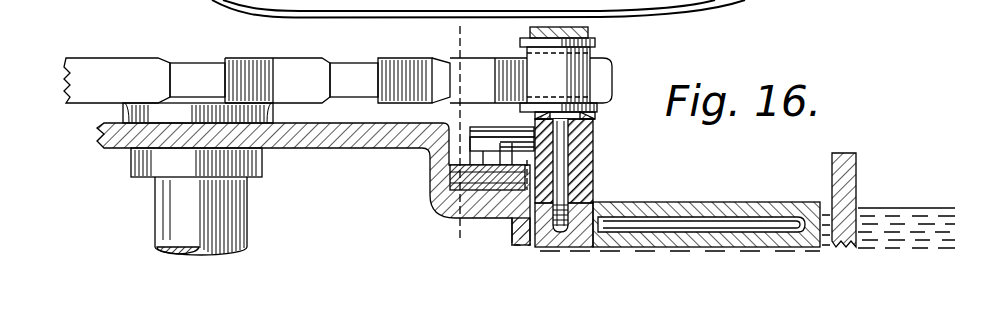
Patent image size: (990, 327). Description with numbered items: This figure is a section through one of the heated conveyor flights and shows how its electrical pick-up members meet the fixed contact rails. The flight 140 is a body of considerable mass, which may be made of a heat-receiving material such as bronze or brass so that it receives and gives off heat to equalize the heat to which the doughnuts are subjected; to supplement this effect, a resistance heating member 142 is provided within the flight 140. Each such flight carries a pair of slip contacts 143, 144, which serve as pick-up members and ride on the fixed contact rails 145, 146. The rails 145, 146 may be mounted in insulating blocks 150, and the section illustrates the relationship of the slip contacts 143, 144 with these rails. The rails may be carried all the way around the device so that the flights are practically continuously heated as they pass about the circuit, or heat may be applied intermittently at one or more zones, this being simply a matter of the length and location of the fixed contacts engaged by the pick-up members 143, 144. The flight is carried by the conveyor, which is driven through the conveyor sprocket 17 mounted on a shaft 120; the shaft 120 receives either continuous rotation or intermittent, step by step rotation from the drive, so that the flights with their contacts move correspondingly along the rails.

The shaft 120 is at (172, 209).
The flight 140 is at (763, 202).
The resistance heating member 142 is at (659, 222).
The slip contact 143 is at (470, 146).
The slip contact 144 is at (502, 150).
The contact rail 145 is at (447, 190).
The contact rail 146 is at (460, 206).
The insulating block 150 is at (452, 177).
The conveyor sprocket 17 is at (480, 30).